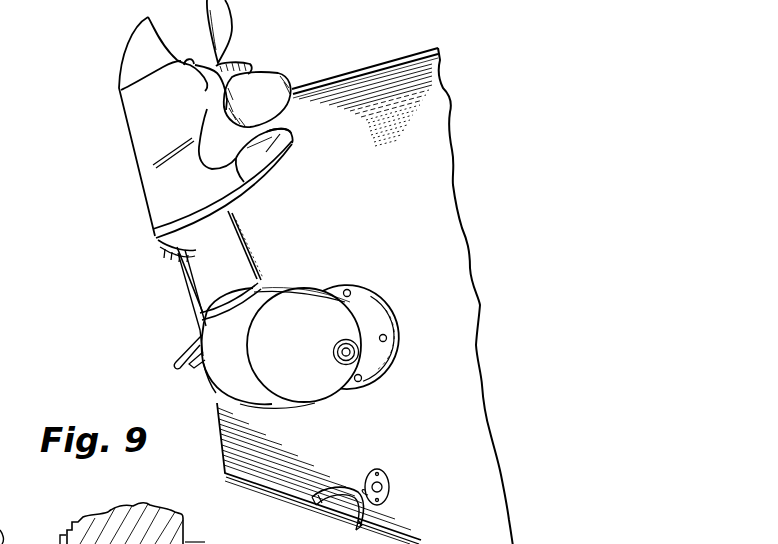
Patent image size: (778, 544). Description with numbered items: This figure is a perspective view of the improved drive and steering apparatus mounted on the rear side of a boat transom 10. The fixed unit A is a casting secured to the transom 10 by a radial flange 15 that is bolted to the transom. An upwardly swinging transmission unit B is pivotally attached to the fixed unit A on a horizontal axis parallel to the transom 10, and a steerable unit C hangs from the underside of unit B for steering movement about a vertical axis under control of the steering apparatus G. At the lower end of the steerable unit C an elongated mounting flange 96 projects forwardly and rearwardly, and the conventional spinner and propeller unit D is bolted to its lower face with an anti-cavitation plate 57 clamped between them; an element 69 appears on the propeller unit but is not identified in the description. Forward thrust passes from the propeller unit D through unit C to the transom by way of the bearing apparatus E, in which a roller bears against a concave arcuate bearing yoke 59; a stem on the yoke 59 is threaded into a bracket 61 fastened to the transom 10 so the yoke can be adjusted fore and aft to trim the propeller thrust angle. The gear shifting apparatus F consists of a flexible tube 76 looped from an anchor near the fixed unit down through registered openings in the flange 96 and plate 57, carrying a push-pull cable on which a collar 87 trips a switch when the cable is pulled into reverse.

The boat transom 10 is at (478, 441).
The radial flange 15 is at (393, 310).
The anti-cavitation plate 57 is at (284, 143).
The bearing yoke 59 is at (356, 528).
The bracket 61 is at (388, 485).
The blade 69 is at (230, 33).
The flexible tube 76 is at (229, 521).
The collar 87 is at (62, 543).
The mounting flange 96 is at (157, 233).
The fixed unit A is at (340, 387).
The upwardly swinging transmission unit B is at (210, 377).
The steerable unit C is at (238, 232).
The spinner and propeller unit D is at (133, 157).
The bearing apparatus E is at (311, 500).
The gear shifting apparatus F is at (185, 297).
The steering apparatus G is at (180, 348).